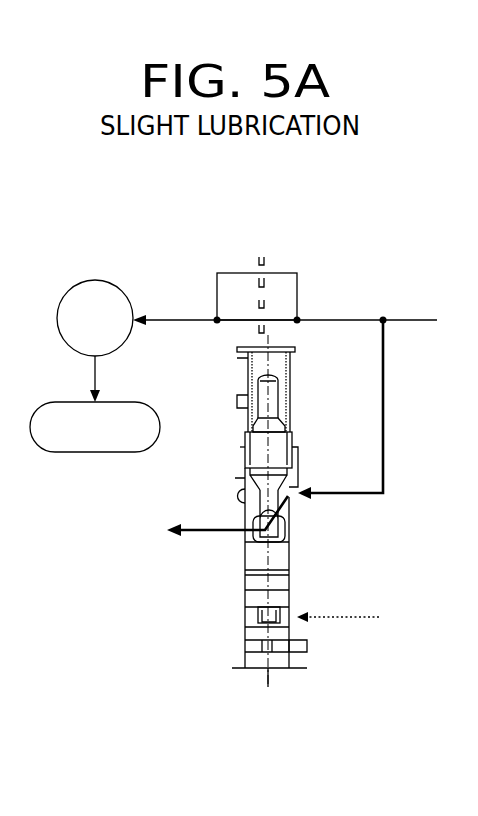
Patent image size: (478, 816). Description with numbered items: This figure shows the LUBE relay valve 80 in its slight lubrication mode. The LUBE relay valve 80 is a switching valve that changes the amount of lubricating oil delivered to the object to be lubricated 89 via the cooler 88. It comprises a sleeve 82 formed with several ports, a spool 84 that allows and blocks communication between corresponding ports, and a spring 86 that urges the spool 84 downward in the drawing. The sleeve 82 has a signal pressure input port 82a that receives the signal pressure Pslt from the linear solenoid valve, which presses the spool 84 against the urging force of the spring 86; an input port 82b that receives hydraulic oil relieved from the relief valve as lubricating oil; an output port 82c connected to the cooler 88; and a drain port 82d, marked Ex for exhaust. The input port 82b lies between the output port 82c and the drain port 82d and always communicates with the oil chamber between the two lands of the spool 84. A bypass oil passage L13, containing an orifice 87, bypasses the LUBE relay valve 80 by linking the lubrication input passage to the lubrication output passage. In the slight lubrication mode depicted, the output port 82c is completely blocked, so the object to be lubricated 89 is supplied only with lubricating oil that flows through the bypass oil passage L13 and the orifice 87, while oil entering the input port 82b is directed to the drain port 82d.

The cooler 88 is at (95, 279).
The object to be lubricated 89 is at (95, 454).
The orifice 87 is at (268, 262).
The bypass oil passage L13 is at (298, 300).
The spring 86 is at (245, 381).
The LUBE relay valve 80 is at (303, 431).
The output port 82c is at (242, 478).
The input port 82b is at (295, 503).
The drain port 82d is at (252, 545).
The spool 84 is at (297, 553).
The sleeve 82 is at (245, 605).
The signal pressure input port 82a is at (295, 624).
The signal pressure Pslt is at (368, 618).
The exhaust Ex is at (213, 516).